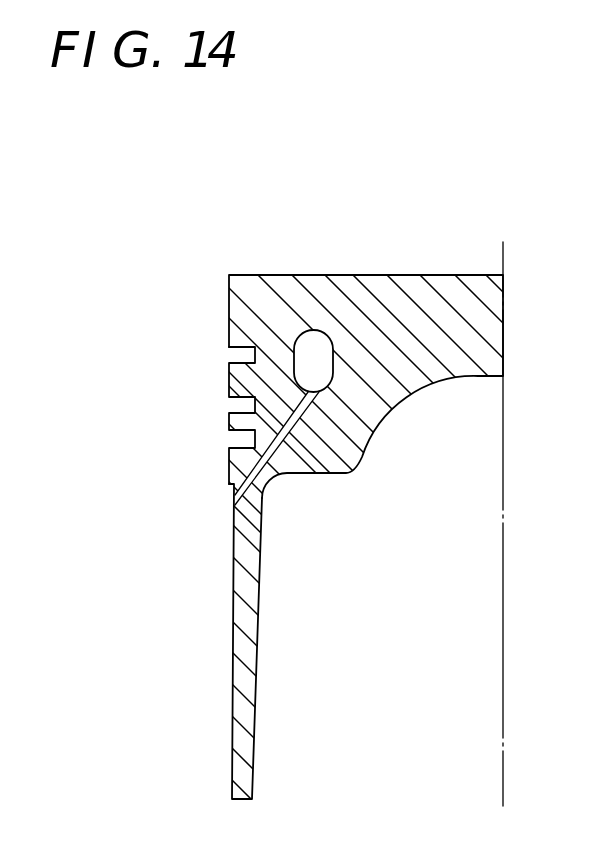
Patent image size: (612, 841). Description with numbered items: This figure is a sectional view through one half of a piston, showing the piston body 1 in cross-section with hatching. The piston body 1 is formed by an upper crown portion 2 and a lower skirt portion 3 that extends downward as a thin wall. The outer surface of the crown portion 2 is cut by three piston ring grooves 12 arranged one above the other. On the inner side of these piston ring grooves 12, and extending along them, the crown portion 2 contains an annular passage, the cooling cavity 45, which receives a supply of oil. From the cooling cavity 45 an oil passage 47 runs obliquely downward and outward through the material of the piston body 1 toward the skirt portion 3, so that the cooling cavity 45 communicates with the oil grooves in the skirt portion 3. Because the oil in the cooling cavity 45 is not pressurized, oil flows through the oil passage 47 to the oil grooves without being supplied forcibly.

The piston body 1 is at (306, 483).
The crown portion 2 is at (307, 312).
The skirt portion 3 is at (242, 679).
The piston ring grooves 12 is at (238, 362).
The cooling cavity 45 is at (322, 353).
The oil passages 47 is at (290, 428).